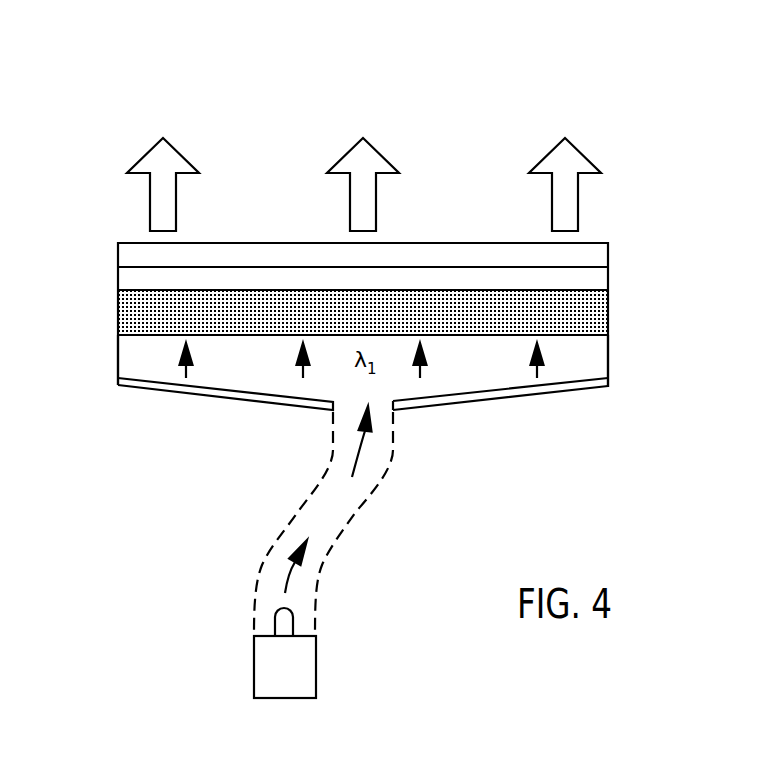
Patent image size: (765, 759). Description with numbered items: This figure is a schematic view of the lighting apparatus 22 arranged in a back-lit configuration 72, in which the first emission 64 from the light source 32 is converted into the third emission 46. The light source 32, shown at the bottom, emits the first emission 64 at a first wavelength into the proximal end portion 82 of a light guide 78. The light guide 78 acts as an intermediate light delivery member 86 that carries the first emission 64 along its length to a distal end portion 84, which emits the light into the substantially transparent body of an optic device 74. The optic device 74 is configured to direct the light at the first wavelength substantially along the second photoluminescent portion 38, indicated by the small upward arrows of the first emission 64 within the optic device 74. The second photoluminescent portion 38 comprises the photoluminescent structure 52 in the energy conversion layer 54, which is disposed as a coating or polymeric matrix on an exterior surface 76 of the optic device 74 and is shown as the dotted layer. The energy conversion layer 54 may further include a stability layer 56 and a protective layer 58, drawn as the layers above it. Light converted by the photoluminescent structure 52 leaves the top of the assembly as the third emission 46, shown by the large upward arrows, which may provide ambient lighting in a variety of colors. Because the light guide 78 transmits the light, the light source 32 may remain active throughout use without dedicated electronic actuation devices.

The lighting apparatus 22 is at (108, 63).
The back-lit configuration 72 is at (625, 118).
The third emission 46 is at (620, 183).
The second photoluminescent portion 38 is at (630, 257).
The protective layer 58 is at (125, 255).
The stability layer 56 is at (125, 273).
The energy conversion layer 54 is at (416, 308).
The photoluminescent structure 52 is at (602, 310).
The exterior surface 76 is at (578, 336).
The optic device 74 is at (125, 353).
The first emission 64 is at (303, 372).
The distal end portion 84 is at (396, 453).
The light guide 78 is at (351, 519).
The intermediate light delivery member 86 is at (255, 551).
The proximal end portion 82 is at (317, 593).
The light source 32 is at (299, 680).